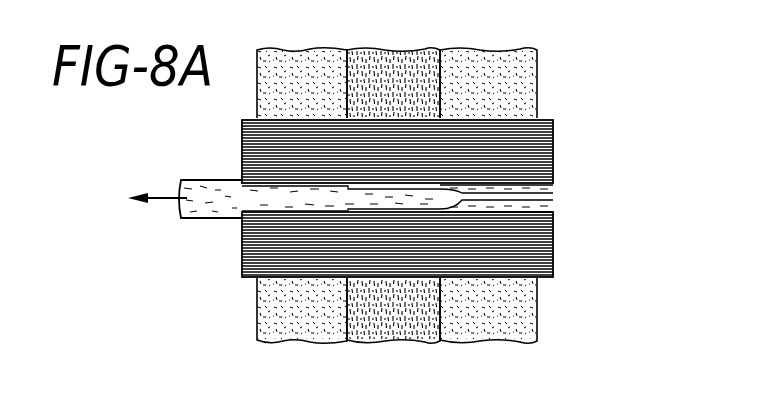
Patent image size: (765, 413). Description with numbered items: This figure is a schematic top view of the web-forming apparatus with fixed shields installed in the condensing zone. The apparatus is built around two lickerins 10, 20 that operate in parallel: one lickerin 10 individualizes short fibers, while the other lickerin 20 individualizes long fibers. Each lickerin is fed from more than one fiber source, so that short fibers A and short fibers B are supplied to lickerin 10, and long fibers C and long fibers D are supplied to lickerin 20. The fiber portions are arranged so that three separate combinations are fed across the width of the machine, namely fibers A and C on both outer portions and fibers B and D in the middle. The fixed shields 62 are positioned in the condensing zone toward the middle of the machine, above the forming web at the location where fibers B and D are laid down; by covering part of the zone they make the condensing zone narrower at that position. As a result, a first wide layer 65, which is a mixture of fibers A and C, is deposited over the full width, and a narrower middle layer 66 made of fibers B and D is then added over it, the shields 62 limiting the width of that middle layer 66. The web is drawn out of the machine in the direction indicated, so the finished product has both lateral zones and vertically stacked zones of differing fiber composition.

The lickerin 10 is at (553, 143).
The lickerin 20 is at (548, 268).
The fixed shields 62 is at (548, 198).
The first wide layer 65 is at (202, 220).
The middle layer 66 is at (202, 192).
The short fibers A is at (287, 58).
The short fibers B is at (397, 60).
The long fibers C is at (297, 330).
The long fibers D is at (400, 332).